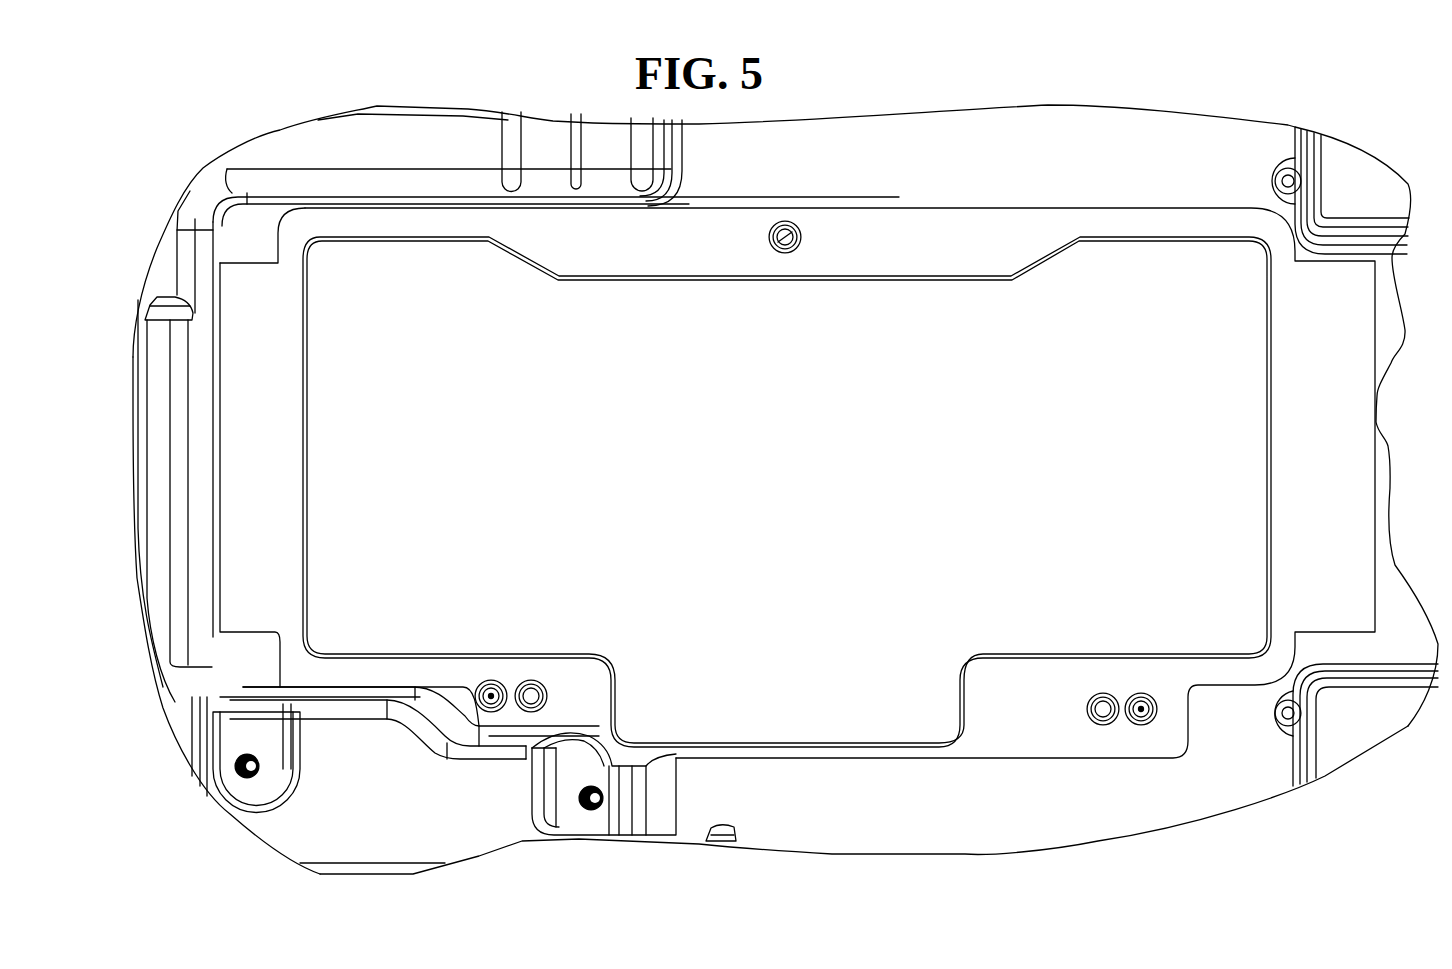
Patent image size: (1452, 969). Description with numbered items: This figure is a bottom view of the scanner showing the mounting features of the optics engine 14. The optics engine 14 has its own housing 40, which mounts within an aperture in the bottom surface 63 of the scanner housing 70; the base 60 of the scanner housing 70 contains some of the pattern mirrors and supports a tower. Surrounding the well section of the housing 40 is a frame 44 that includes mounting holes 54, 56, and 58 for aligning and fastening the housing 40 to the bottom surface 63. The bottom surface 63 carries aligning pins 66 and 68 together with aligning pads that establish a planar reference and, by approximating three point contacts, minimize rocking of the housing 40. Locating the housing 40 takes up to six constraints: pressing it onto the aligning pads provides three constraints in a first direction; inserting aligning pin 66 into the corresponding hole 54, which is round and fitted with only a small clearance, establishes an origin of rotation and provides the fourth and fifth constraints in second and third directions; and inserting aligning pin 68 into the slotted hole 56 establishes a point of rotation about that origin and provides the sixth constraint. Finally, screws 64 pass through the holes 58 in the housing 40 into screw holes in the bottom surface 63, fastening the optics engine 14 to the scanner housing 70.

The optics engine 14 is at (1378, 391).
The housing 40 is at (909, 198).
The frame 44 is at (985, 236).
The mounting hole 54 is at (471, 679).
The mounting hole 56 is at (1128, 684).
The mounting hole 58 is at (763, 225).
The base 60 is at (886, 810).
The bottom surface 63 is at (1113, 132).
The screws 64 is at (776, 223).
The aligning pin 66 is at (483, 674).
The aligning pin 68 is at (1145, 684).
The scanner housing 70 is at (1202, 116).